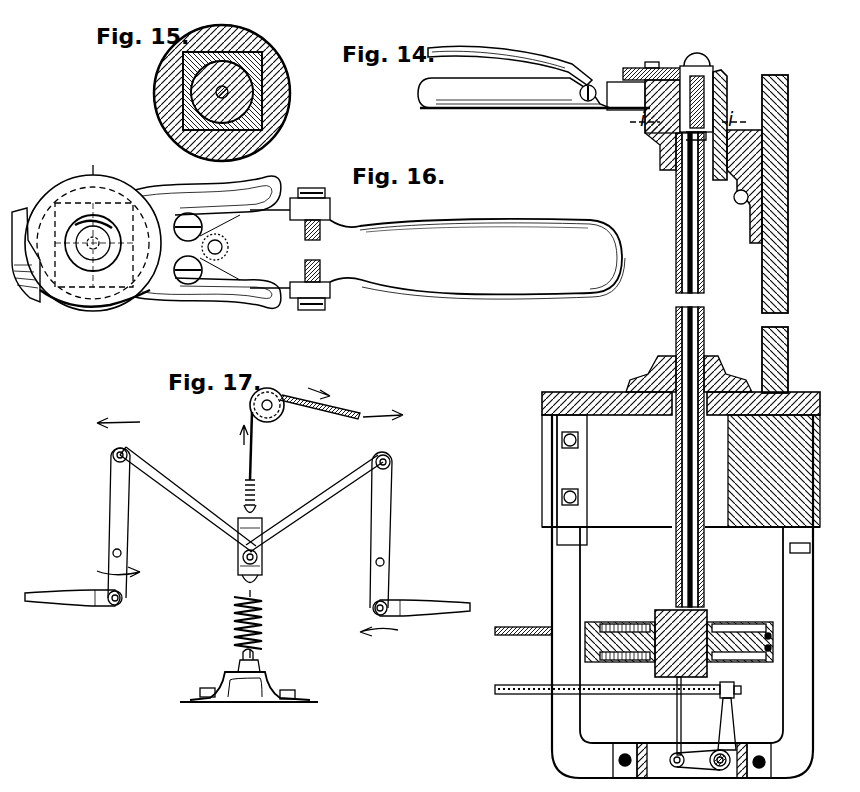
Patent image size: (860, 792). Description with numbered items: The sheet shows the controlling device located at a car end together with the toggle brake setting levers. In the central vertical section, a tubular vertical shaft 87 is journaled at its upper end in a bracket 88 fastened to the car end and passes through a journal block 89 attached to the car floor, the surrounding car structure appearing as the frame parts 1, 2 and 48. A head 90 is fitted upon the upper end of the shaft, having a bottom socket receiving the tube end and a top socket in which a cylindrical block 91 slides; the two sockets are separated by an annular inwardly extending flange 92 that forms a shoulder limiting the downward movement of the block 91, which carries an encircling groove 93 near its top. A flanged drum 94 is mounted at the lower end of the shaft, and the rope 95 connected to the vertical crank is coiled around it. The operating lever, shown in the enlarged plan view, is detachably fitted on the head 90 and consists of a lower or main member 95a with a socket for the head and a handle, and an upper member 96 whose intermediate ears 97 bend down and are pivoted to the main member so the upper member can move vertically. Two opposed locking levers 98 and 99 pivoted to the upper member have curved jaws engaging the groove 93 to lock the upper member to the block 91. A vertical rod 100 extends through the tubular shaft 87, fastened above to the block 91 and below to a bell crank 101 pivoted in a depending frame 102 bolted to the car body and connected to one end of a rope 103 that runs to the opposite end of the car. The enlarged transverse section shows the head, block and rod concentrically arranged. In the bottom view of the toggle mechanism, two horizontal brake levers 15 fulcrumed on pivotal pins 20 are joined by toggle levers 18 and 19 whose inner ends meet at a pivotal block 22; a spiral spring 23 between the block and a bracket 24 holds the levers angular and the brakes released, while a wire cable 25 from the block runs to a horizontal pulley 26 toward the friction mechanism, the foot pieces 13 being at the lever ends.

In FIG. 14, the frame top plate 1 is at (553, 440).
In FIG. 14, the frame column 2 is at (762, 298).
In FIG. 17, the foot lever 13 is at (44, 595).
In FIG. 17, the horizontal brake lever 15 is at (107, 526).
In FIG. 17, the toggle lever 18 is at (314, 503).
In FIG. 17, the toggle lever 19 is at (188, 499).
In FIG. 17, the pivotal pin 20 is at (121, 553).
In FIG. 17, the pivotal block 22 is at (262, 572).
In FIG. 17, the spiral spring 23 is at (263, 624).
In FIG. 17, the bracket 24 is at (249, 675).
In FIG. 17, the wire cable 25 is at (263, 462).
In FIG. 17, the horizontal pulley 26 is at (283, 416).
In FIG. 14, the housing base 48 is at (682, 603).
In FIG. 14, the vertical shaft 87 is at (702, 566).
In FIG. 14, the bracket 88 is at (740, 203).
In FIG. 16, the bracket 88 is at (22, 210).
In FIG. 14, the journal block 89 is at (660, 380).
In FIG. 15, the head 90 is at (190, 122).
In FIG. 14, the head 90 is at (670, 148).
In FIG. 16, the head 90 is at (58, 278).
In FIG. 15, the cylindrical block 91 is at (240, 97).
In FIG. 14, the cylindrical block 91 is at (718, 88).
In FIG. 16, the cylindrical block 91 is at (93, 272).
In FIG. 14, the annular inwardly extending flange 92 is at (700, 136).
In FIG. 14, the encircling groove 93 is at (722, 72).
In FIG. 16, the encircling groove 93 is at (122, 243).
In FIG. 14, the flanged drum 94 is at (733, 640).
In FIG. 14, the rope 95 is at (508, 627).
In FIG. 15, the lower or main member 95a is at (172, 88).
In FIG. 14, the lower or main member 95a is at (575, 109).
In FIG. 16, the lower or main member 95a is at (573, 224).
In FIG. 14, the upper member 96 is at (528, 60).
In FIG. 16, the upper member 96 is at (477, 259).
In FIG. 14, the intermediate ears 97 is at (590, 75).
In FIG. 16, the intermediate ears 97 is at (330, 204).
In FIG. 16, the locking lever 98 is at (208, 195).
In FIG. 14, the locking lever 99 is at (670, 68).
In FIG. 16, the locking lever 99 is at (208, 295).
In FIG. 15, the vertical rod 100 is at (230, 88).
In FIG. 14, the vertical rod 100 is at (688, 266).
In FIG. 16, the vertical rod 100 is at (93, 178).
In FIG. 14, the bell crank 101 is at (700, 753).
In FIG. 14, the depending frame 102 is at (792, 735).
In FIG. 14, the rope 103 is at (610, 695).